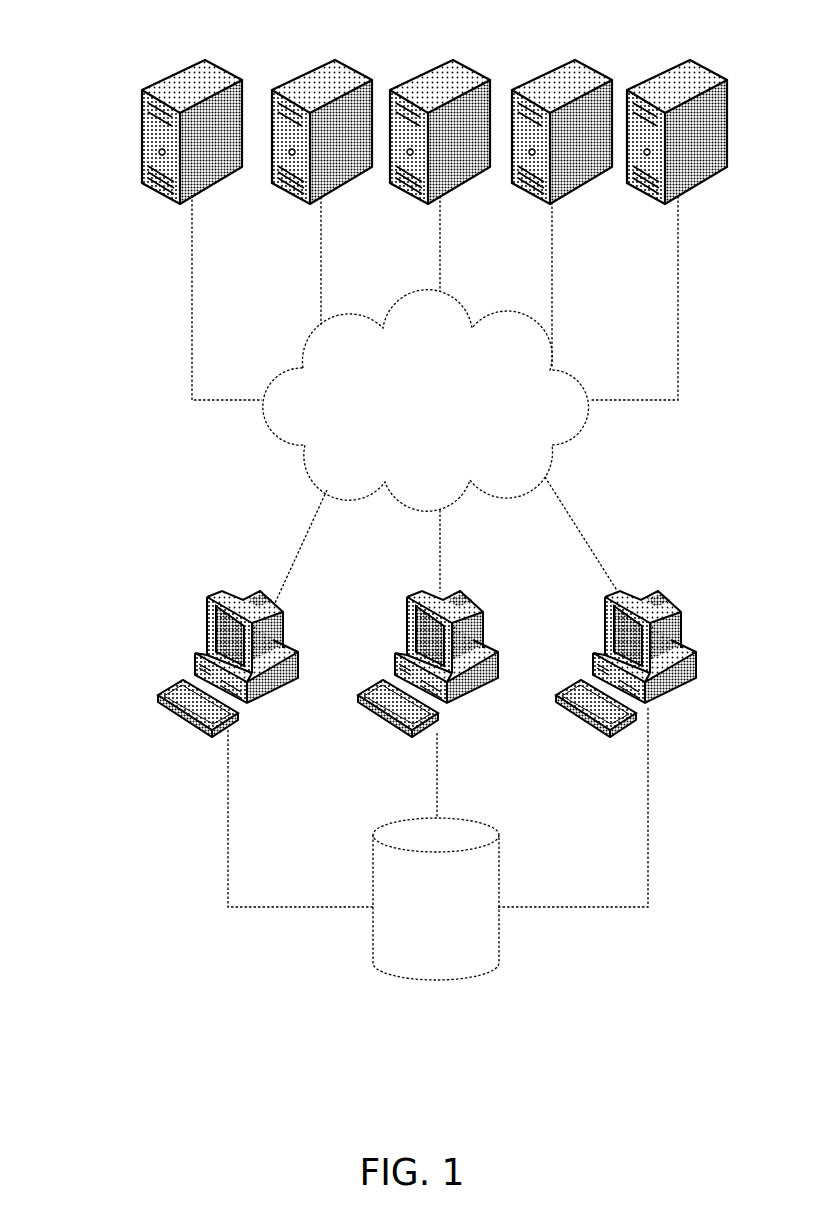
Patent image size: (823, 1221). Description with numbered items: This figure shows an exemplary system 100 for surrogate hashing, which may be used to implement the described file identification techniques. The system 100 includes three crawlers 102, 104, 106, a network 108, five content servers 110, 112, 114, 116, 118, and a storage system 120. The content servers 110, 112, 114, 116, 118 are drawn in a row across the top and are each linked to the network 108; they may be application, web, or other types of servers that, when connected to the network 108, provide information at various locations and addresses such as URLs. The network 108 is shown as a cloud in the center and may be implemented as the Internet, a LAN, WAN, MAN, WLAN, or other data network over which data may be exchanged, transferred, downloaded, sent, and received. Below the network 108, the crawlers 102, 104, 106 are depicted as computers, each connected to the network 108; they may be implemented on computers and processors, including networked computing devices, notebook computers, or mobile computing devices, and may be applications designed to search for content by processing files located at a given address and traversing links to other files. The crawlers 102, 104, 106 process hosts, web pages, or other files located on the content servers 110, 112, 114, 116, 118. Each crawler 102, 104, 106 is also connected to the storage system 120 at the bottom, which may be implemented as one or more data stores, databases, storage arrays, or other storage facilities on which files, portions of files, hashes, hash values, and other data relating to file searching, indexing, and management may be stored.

The system 100 is at (70, 999).
The crawler 102 is at (206, 625).
The crawler 104 is at (406, 608).
The crawler 106 is at (604, 610).
The network 108 is at (305, 447).
The content server 110 is at (207, 56).
The content server 112 is at (337, 54).
The content server 114 is at (456, 55).
The content server 116 is at (577, 54).
The content server 118 is at (692, 55).
The storage system 120 is at (372, 954).